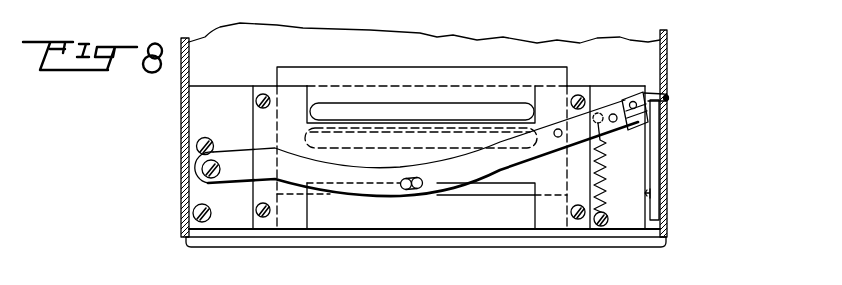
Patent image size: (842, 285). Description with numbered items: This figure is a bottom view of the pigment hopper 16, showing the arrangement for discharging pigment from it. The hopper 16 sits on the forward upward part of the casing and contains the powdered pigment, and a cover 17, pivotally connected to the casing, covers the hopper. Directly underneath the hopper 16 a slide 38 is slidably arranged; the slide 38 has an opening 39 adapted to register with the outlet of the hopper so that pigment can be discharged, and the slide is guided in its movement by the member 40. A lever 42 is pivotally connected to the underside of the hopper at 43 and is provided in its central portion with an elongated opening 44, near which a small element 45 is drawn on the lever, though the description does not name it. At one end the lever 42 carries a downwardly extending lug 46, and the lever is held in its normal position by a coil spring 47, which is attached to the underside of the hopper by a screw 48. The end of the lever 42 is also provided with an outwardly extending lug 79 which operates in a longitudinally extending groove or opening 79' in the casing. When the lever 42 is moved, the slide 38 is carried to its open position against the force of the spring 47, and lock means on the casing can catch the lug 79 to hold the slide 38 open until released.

The hopper 16 is at (487, 226).
The cover 17 is at (608, 243).
The slide 38 is at (367, 72).
The opening 39 is at (440, 103).
The member 40 is at (550, 226).
The lever 42 is at (350, 188).
The pivot 43 is at (199, 169).
The elongated opening 44 is at (402, 193).
The roller 45 is at (418, 193).
The downwardly extending lug 46 is at (640, 127).
The coil spring 47 is at (606, 174).
The screw 48 is at (608, 217).
The outwardly extending lug 79 is at (680, 108).
The groove 79' is at (683, 160).